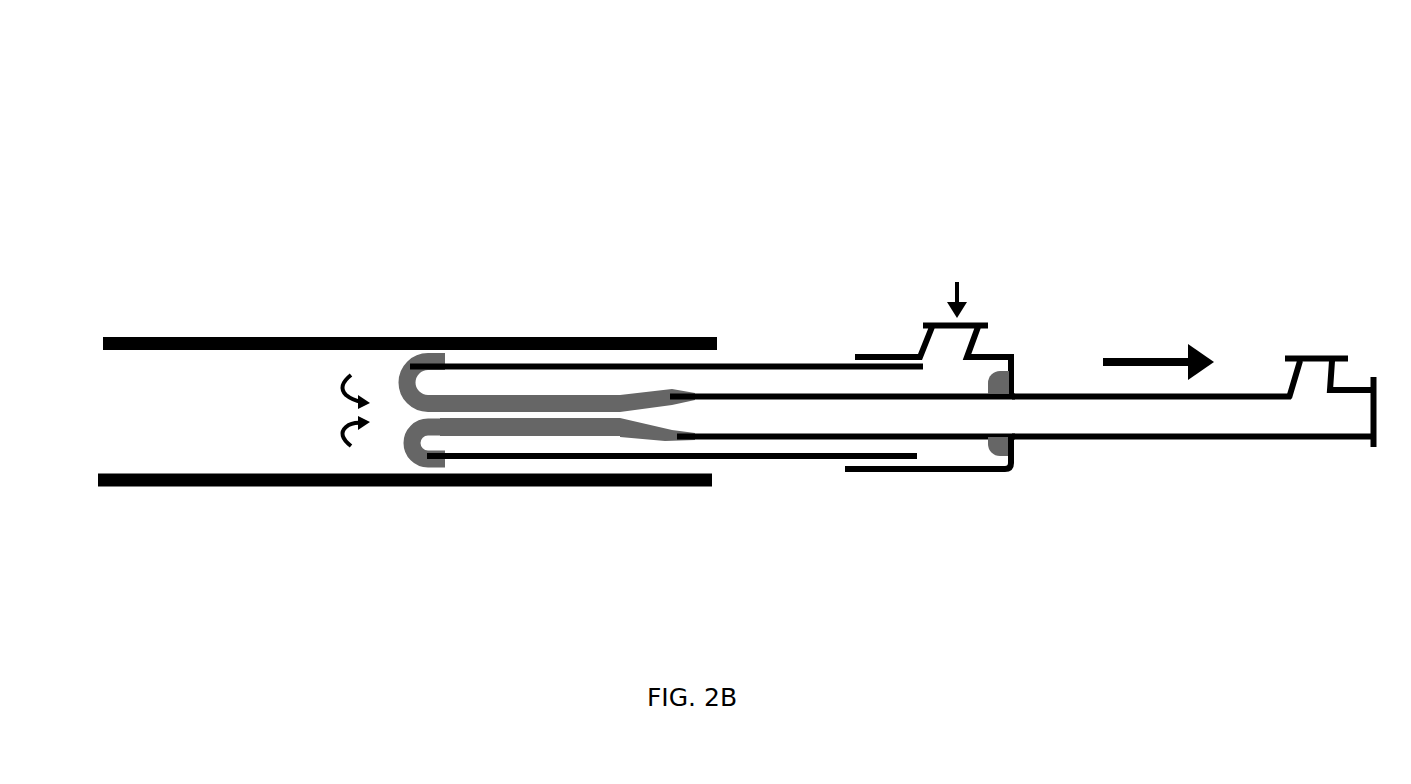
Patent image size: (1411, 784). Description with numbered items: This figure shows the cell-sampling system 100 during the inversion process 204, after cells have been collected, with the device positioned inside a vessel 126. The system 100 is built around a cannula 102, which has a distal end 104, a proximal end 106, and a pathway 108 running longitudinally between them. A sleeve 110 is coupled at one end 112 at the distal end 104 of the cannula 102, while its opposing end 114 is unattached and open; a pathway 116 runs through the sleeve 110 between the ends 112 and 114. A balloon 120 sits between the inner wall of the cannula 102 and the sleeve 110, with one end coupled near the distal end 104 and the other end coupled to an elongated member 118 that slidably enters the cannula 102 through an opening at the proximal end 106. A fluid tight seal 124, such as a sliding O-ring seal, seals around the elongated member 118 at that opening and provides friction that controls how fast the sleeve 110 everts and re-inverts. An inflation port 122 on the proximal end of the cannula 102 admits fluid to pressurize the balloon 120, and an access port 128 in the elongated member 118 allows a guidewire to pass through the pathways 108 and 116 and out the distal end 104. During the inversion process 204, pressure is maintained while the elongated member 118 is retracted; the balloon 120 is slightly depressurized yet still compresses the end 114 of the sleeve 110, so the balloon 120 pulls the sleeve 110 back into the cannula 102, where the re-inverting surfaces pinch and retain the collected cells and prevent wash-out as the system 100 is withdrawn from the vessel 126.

The system 100 is at (132, 122).
The cannula 102 is at (872, 478).
The distal end 104 is at (472, 362).
The proximal end 106 is at (957, 473).
The pathway 108 is at (783, 378).
The sleeve 110 is at (403, 452).
The end 112 is at (440, 462).
The opposing end 114 is at (628, 418).
The pathway 116 is at (573, 410).
The elongated member 118 is at (1222, 437).
The balloon 120 is at (405, 365).
The inflation port 122 is at (957, 269).
The fluid tight seal 124 is at (1015, 378).
The vessel 126 is at (255, 330).
The access port 128 is at (1313, 357).
The inversion process 204 is at (345, 402).